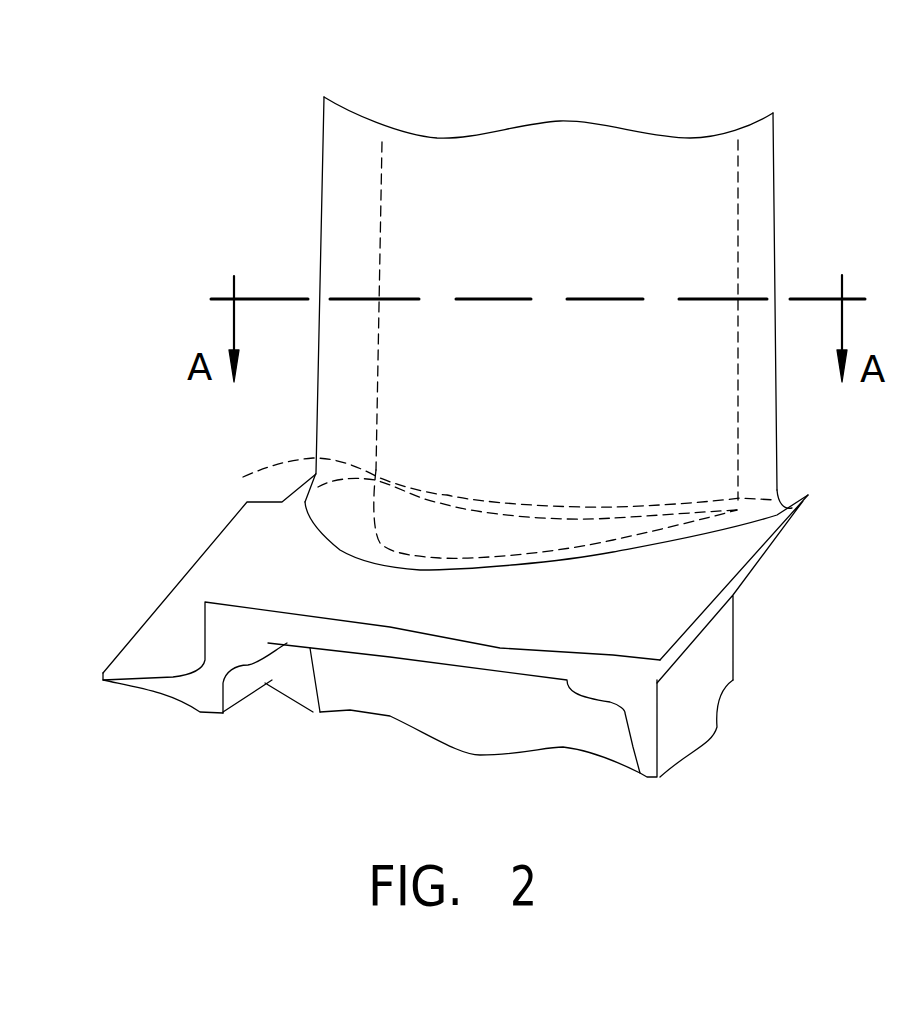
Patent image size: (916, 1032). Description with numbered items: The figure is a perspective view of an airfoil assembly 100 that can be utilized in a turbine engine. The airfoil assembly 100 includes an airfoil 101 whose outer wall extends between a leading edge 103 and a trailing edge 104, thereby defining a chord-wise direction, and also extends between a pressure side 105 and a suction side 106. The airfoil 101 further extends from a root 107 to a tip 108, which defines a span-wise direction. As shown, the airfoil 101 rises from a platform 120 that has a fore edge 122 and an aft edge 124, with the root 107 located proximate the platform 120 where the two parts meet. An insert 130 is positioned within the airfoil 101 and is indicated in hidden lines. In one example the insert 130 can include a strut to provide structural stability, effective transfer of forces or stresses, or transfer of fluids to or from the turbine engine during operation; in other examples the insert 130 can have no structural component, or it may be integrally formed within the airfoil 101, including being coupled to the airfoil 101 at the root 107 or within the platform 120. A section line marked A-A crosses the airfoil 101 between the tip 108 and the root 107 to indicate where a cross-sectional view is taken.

The airfoil assembly 100 is at (732, 106).
The airfoil 101 is at (293, 205).
The leading edge 103 is at (317, 373).
The trailing edge 104 is at (760, 252).
The pressure side 105 is at (485, 488).
The suction side 106 is at (372, 557).
The root 107 is at (757, 467).
The tip 108 is at (760, 162).
The platform 120 is at (300, 595).
The fore edge 122 is at (232, 568).
The aft edge 124 is at (750, 562).
The insert 130 is at (377, 395).